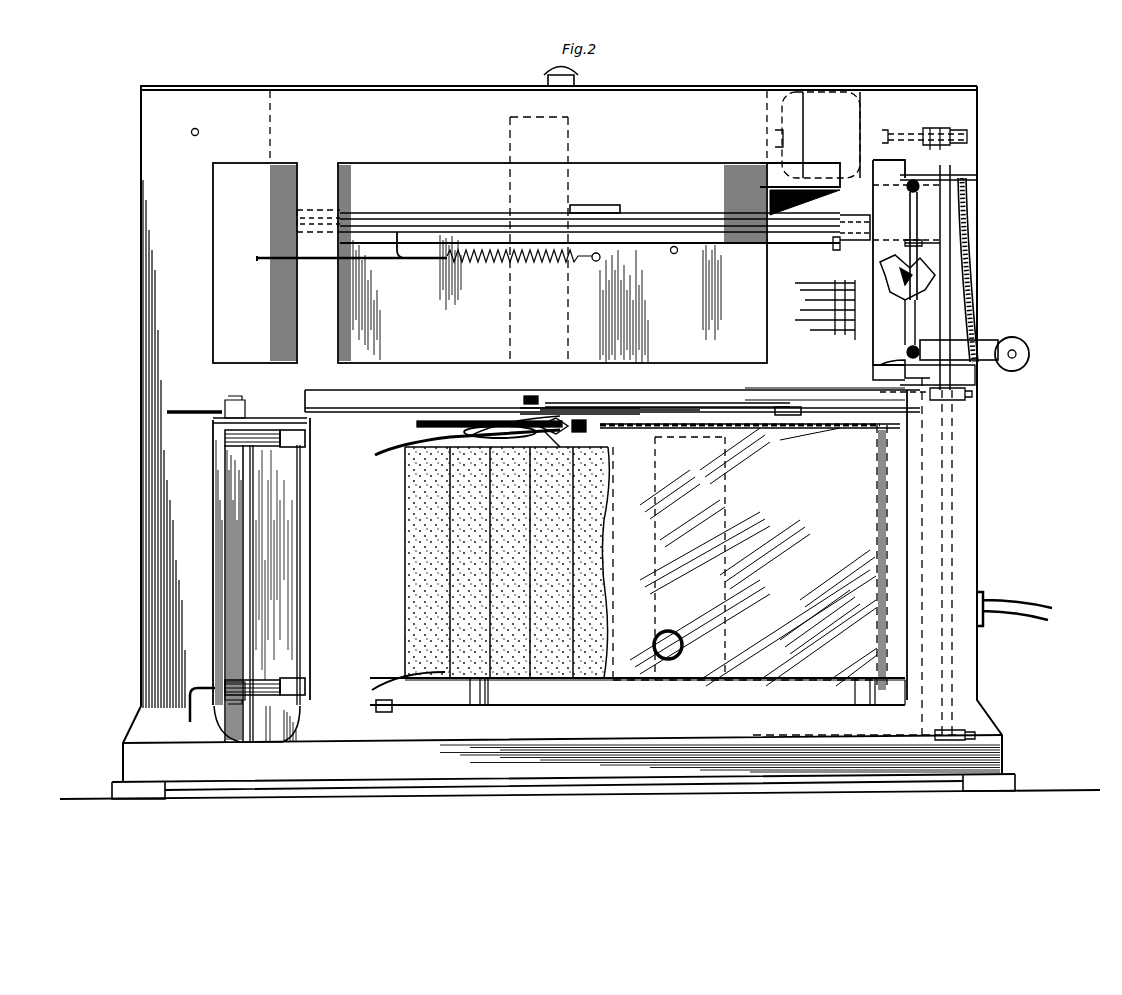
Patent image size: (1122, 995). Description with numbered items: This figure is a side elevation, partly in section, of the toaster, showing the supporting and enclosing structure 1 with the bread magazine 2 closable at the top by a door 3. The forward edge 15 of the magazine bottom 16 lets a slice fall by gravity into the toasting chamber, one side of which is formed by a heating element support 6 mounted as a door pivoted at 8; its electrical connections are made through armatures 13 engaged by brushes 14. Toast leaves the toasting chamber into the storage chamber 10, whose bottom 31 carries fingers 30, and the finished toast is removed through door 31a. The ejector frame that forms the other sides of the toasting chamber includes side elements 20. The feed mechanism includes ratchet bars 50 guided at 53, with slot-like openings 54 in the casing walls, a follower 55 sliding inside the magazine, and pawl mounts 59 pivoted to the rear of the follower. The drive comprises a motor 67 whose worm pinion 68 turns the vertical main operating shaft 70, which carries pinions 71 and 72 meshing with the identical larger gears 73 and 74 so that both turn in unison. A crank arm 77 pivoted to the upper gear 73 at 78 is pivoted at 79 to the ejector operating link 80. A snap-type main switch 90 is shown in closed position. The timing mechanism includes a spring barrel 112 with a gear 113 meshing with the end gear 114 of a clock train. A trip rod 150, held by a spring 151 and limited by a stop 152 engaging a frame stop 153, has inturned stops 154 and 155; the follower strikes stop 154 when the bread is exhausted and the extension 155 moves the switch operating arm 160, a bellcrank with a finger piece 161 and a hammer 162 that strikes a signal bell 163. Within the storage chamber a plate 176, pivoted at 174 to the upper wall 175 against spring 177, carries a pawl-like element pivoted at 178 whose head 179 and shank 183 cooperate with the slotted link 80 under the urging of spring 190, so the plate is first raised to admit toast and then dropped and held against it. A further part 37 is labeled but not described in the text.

The supporting and enclosing structure 1 is at (160, 275).
The magazine 2 is at (680, 183).
The door 3 is at (430, 86).
The heating element support 6 is at (296, 532).
The pivot 8 is at (289, 410).
The toast storage chamber 10 is at (612, 424).
The armatures 13 is at (303, 438).
The brushes 14 is at (268, 450).
The forward edge 15 is at (268, 360).
The bottom of bread magazine 16 is at (420, 360).
The side elements 20 is at (260, 568).
The fingers 30 is at (382, 700).
The bottom of toast storage chamber 31 is at (548, 680).
The door 31a is at (750, 557).
The pivot pin 37 is at (196, 128).
The ratchet bars 50 is at (430, 213).
The guide 53 is at (309, 210).
The slot-like openings 54 is at (398, 248).
The follower 55 is at (528, 186).
The pawl mounts 59 is at (590, 205).
The motor 67 is at (831, 92).
The worm pinion 68 is at (938, 128).
The main operating shaft 70 is at (946, 205).
The pinion 71 is at (968, 394).
The pinion 72 is at (968, 735).
The upper gear 73 is at (843, 427).
The bottom gear 74 is at (795, 735).
The crank arm 77 is at (705, 403).
The pivot 78 is at (782, 415).
The pivot 79 is at (532, 396).
The ejector operating link 80 is at (713, 410).
The main switch 90 is at (938, 292).
The spring barrel 112 is at (875, 332).
The gear 113 is at (850, 290).
The end gear 114 is at (798, 293).
The trip rod 150 is at (750, 243).
The spring 151 is at (489, 262).
The stop 152 is at (667, 250).
The stop 153 is at (677, 252).
The stop 154 is at (259, 256).
The extension 155 is at (927, 243).
The switch operating lever 160 is at (922, 226).
The finger piece 161 is at (1024, 345).
The hammer 162 is at (919, 184).
The signal bell 163 is at (870, 206).
The pivot 174 is at (600, 428).
The upper wall 175 is at (426, 421).
The plate 176 is at (393, 450).
The spring 177 is at (494, 416).
The pivot 178 is at (556, 436).
The head 179 is at (543, 425).
The shank portion 183 is at (578, 420).
The spring 190 is at (501, 426).